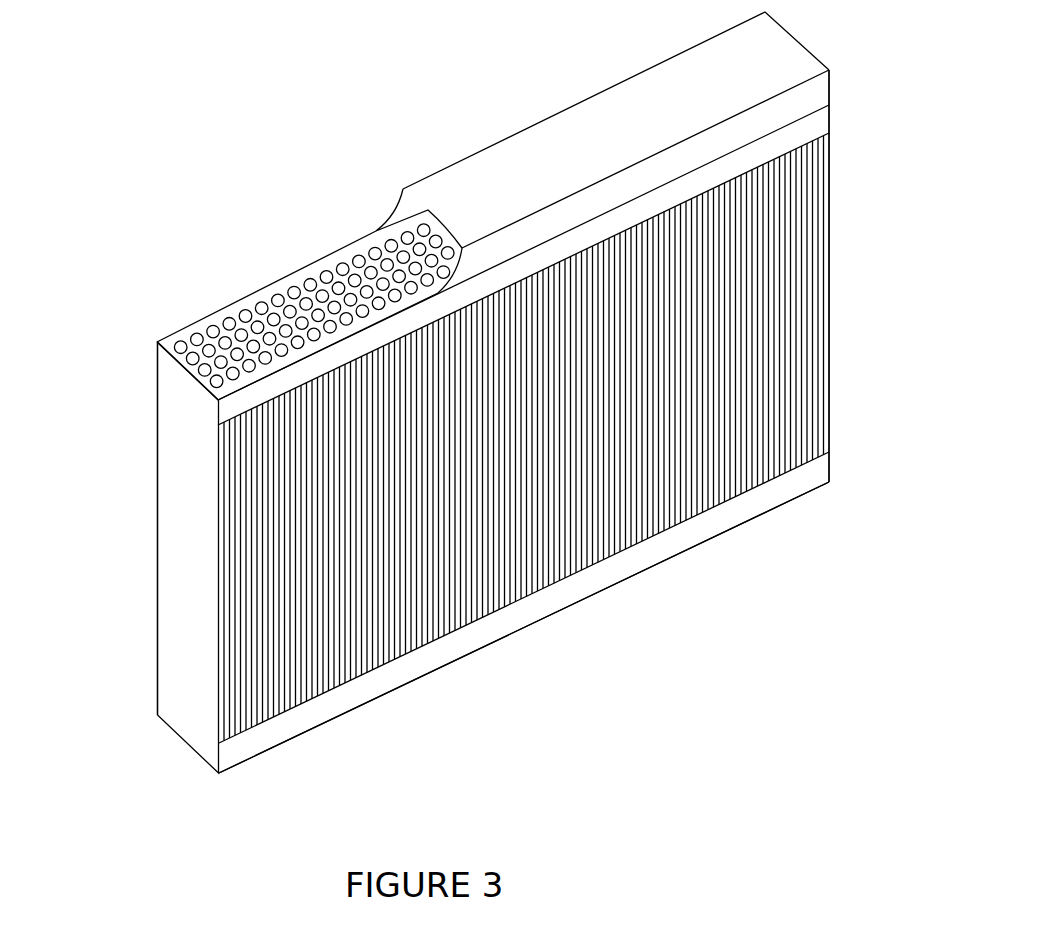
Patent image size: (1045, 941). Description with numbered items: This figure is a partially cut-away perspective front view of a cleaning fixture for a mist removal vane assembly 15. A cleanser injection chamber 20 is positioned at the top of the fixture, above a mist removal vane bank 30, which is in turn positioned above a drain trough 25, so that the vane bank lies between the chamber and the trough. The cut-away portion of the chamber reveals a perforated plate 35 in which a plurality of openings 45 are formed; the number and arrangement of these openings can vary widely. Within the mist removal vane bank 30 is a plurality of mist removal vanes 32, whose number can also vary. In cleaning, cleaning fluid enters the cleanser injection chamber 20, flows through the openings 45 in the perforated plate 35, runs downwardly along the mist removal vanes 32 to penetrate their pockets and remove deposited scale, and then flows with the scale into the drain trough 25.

The mist removal vane assembly 15 is at (155, 595).
The cleanser injection chamber 20 is at (567, 140).
The drain trough 25 is at (510, 625).
The mist removal vane bank 30 is at (823, 263).
The mist removal vanes 32 is at (593, 542).
The perforated plate 35 is at (345, 257).
The openings 45 is at (245, 318).